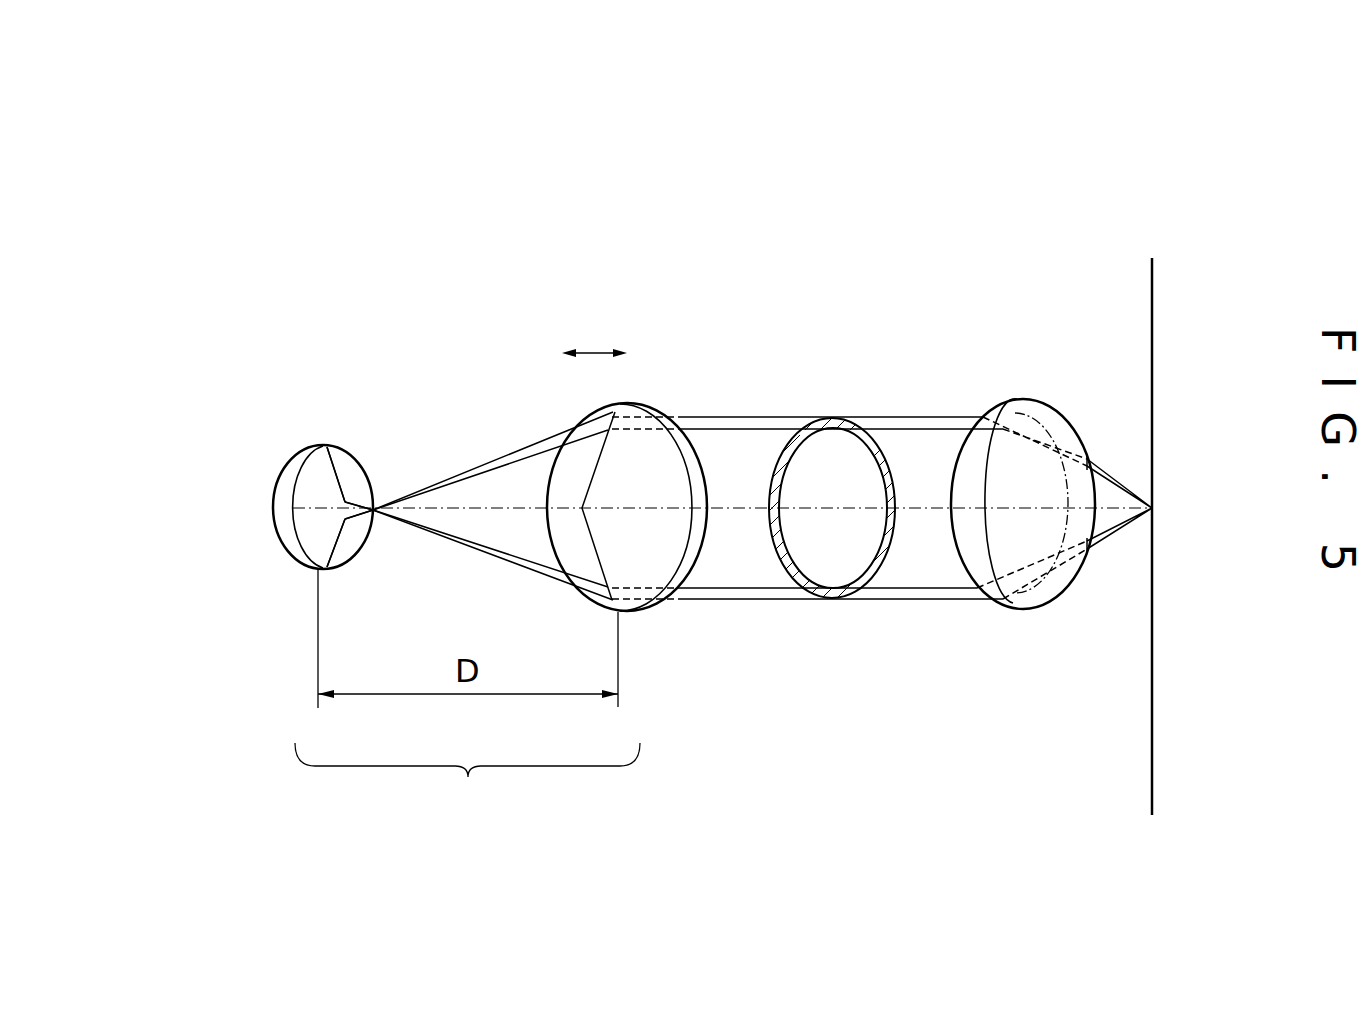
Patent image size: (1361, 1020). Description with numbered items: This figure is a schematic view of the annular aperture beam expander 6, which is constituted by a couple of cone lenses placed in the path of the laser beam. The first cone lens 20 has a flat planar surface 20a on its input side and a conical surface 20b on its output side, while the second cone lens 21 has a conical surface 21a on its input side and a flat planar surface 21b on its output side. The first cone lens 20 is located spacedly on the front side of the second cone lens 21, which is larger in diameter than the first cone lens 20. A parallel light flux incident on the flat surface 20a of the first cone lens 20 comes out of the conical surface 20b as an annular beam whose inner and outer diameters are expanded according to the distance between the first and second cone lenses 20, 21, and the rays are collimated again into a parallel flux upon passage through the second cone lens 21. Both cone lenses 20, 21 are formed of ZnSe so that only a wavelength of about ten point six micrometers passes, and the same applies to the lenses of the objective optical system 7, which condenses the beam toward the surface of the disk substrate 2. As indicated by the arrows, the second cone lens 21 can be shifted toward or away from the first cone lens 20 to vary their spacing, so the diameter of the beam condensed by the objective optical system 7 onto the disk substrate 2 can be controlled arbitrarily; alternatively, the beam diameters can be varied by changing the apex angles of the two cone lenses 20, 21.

The disk substrate 2 is at (1152, 358).
The annular beam expander 6 is at (467, 782).
The objective optical system 7 is at (1037, 412).
The first cone lens 20 is at (303, 448).
The flat planar surface 20a is at (283, 551).
The conical surface 20b is at (343, 463).
The second cone lens 21 is at (648, 406).
The conical surface 21a is at (583, 450).
The flat planar surface 21b is at (703, 553).